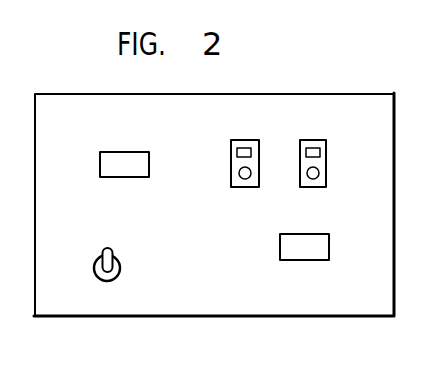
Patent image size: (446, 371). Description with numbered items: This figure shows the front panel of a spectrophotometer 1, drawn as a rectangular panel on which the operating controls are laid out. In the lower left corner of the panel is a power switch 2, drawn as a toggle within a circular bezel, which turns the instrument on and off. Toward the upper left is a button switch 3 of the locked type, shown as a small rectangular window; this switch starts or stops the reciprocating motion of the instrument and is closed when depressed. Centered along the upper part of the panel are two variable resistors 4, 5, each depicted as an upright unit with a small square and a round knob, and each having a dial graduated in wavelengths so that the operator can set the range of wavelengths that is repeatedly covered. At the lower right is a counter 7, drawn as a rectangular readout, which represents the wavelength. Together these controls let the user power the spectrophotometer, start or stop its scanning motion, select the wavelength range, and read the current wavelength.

The spectrophotometer 1 is at (317, 318).
The power switch 2 is at (95, 268).
The button switch 3 is at (149, 154).
The variable resistor 4 is at (245, 140).
The variable resistor 5 is at (313, 140).
The counter 7 is at (329, 245).